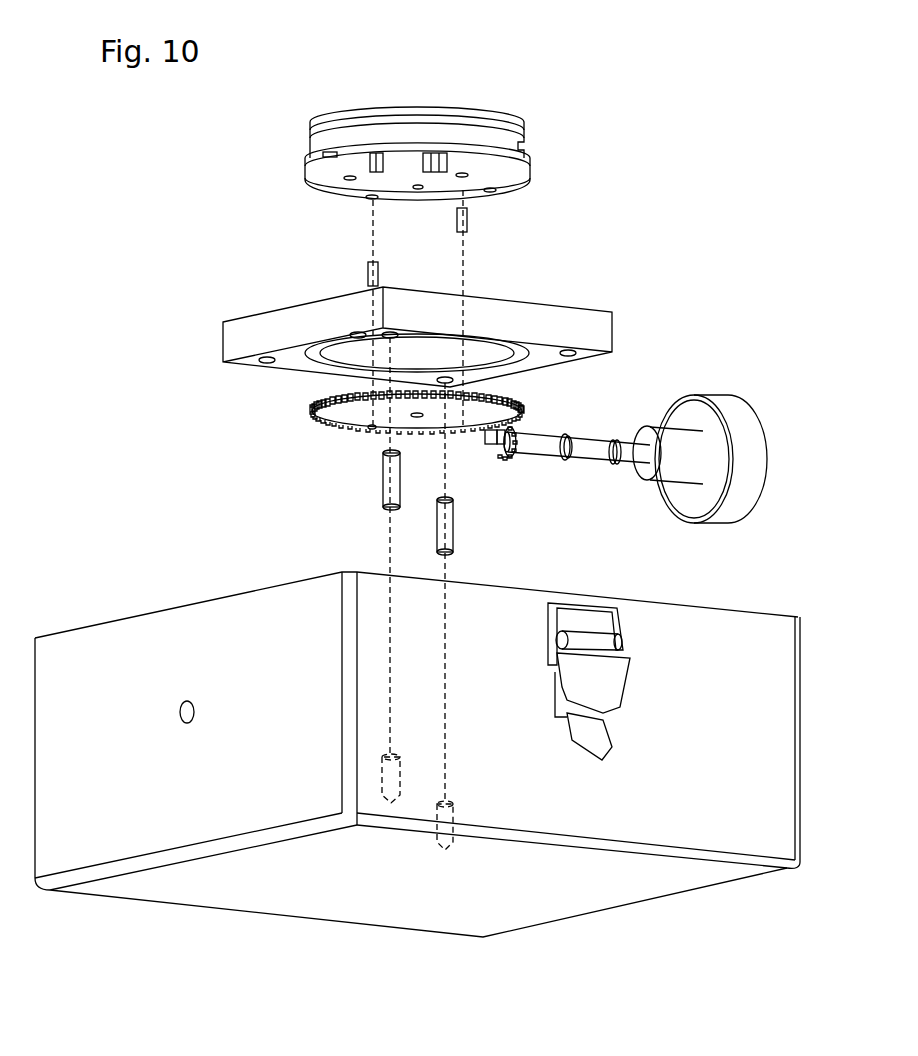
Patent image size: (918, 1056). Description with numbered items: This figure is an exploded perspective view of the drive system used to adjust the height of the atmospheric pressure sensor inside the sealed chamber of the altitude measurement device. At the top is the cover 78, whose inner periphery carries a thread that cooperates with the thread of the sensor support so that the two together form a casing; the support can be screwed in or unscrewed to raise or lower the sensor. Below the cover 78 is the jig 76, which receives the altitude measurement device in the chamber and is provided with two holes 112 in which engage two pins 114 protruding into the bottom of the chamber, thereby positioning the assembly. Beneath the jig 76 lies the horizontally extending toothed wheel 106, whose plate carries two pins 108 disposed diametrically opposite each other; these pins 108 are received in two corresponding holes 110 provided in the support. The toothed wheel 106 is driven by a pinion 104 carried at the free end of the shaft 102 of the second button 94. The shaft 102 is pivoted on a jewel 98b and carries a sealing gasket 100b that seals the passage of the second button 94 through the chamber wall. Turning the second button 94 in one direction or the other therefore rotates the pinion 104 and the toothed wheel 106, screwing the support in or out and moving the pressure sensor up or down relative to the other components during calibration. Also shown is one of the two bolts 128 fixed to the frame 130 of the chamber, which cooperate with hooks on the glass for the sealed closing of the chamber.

The cover 78 is at (550, 127).
The holes 110 is at (462, 173).
The pins 108 is at (468, 218).
The jig 76 is at (592, 329).
The holes 112 is at (445, 378).
The toothed wheel 106 is at (523, 408).
The pinion 104 is at (500, 458).
The shaft 102 is at (599, 460).
The sealing gasket 100b is at (564, 461).
The jewel 98b is at (613, 445).
The second button 94 is at (753, 426).
The pins 114 is at (386, 484).
The bolts 128 is at (612, 688).
The frame 130 is at (748, 652).